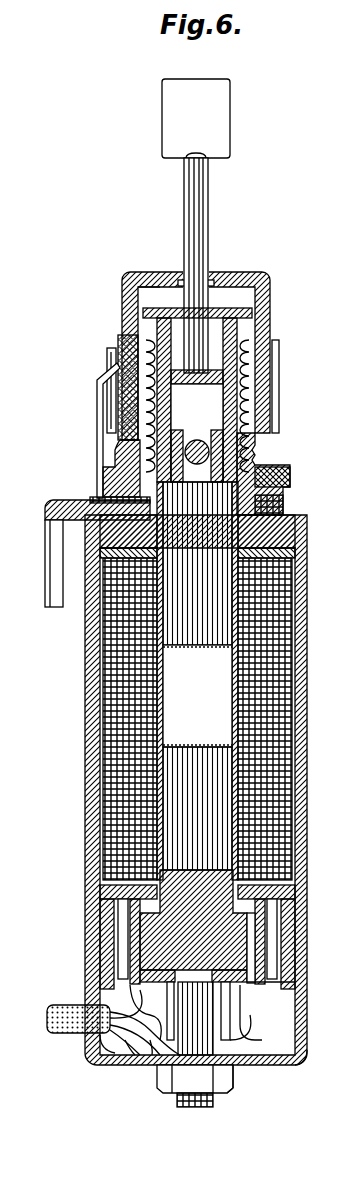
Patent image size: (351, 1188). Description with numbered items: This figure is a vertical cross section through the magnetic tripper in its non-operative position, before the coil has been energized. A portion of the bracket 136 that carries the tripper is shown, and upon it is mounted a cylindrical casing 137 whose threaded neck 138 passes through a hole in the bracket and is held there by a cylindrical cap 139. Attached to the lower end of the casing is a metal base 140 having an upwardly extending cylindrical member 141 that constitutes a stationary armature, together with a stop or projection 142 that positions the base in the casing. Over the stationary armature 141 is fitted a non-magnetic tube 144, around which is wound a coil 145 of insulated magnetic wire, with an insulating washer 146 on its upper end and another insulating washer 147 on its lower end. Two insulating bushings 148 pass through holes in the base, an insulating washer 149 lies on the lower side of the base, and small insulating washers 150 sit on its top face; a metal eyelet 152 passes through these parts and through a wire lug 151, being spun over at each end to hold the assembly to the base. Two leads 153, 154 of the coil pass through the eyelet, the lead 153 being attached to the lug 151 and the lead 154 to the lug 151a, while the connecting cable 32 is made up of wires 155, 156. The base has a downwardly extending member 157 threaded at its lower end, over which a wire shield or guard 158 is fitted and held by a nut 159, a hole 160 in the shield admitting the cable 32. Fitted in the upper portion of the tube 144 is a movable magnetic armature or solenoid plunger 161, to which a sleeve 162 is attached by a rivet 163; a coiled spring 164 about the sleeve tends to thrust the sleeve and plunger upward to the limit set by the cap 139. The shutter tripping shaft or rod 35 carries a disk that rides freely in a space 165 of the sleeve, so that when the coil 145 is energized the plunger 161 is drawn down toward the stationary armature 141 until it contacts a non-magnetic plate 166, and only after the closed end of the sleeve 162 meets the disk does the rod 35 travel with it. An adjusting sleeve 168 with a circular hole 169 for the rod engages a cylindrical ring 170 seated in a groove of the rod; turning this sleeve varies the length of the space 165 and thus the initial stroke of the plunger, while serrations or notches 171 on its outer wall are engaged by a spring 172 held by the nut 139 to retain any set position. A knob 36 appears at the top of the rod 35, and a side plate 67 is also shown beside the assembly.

The knob 36 is at (222, 122).
The shutter tripping shaft or rod 35 is at (207, 199).
The adjusting sleeve 168 is at (272, 290).
The circular hole 169 is at (165, 279).
The cylindrical ring 170 is at (228, 281).
The sleeve 162 is at (255, 318).
The space 165 is at (128, 345).
The coiled spring 164 is at (262, 375).
The side plate 67 is at (120, 380).
The serrations or notches 171 is at (281, 412).
The spring 172 is at (100, 420).
The rivet 163 is at (204, 440).
The cylindrical cap 139 is at (280, 462).
The threaded neck 138 is at (290, 480).
The bracket 136 is at (70, 503).
The cylindrical casing 137 is at (306, 800).
The insulating washer 146 is at (290, 556).
The coil 145 is at (290, 665).
The movable magnetic armature or solenoid plunger 161 is at (190, 645).
The non-magnetic tube 144 is at (163, 687).
The non-magnetic plate 166 is at (208, 740).
The cylindrical member or stationary armature 141 is at (187, 770).
The metal base 140 is at (145, 963).
The insulating washer 147 is at (316, 890).
The small insulating washers 150 is at (316, 904).
The insulating bushings 148 is at (316, 927).
The metal eyelet 152 is at (316, 946).
The stop or projection 142 is at (256, 963).
The insulating washer 149 is at (296, 980).
The lead 154 is at (262, 1040).
The hole 160 is at (100, 985).
The connecting cable 32 is at (112, 1030).
The wire 155 is at (100, 1050).
The lead 153 is at (125, 1058).
The wire 156 is at (152, 1058).
The wire lug 151 is at (157, 1075).
The lug 151a is at (236, 1072).
The wire shield or guard 158 is at (300, 1070).
The nut 159 is at (225, 1095).
The downwardly extending member 157 is at (195, 1107).